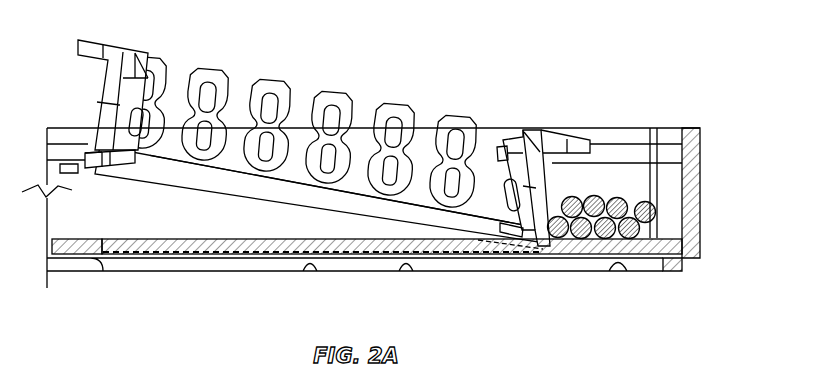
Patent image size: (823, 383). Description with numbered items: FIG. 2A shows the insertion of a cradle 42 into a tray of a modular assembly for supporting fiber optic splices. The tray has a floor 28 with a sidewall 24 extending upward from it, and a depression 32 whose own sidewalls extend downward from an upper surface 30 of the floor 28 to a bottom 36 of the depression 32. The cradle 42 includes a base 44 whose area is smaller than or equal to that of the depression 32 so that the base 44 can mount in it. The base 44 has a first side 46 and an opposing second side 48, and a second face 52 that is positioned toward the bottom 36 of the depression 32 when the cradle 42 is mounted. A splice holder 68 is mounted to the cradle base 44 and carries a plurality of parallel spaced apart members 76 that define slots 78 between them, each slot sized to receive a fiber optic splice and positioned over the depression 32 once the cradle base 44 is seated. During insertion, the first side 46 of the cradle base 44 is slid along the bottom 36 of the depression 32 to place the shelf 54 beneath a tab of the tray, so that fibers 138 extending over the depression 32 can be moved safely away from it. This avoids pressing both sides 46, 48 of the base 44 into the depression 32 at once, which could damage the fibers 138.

The sidewall 24 is at (692, 183).
The floor 28 is at (628, 248).
The upper surface 30 is at (76, 237).
The depression 32 is at (142, 246).
The bottom 36 is at (262, 240).
The cradle 42 is at (84, 131).
The base 44 is at (320, 223).
The first side 46 is at (544, 246).
The second side 48 is at (95, 148).
The second face 52 is at (233, 204).
The shelf 54 is at (124, 152).
The splice holder 68 is at (318, 112).
The parallel spaced apart members 76 is at (270, 83).
The slots 78 is at (428, 115).
The fibers 138 is at (643, 202).